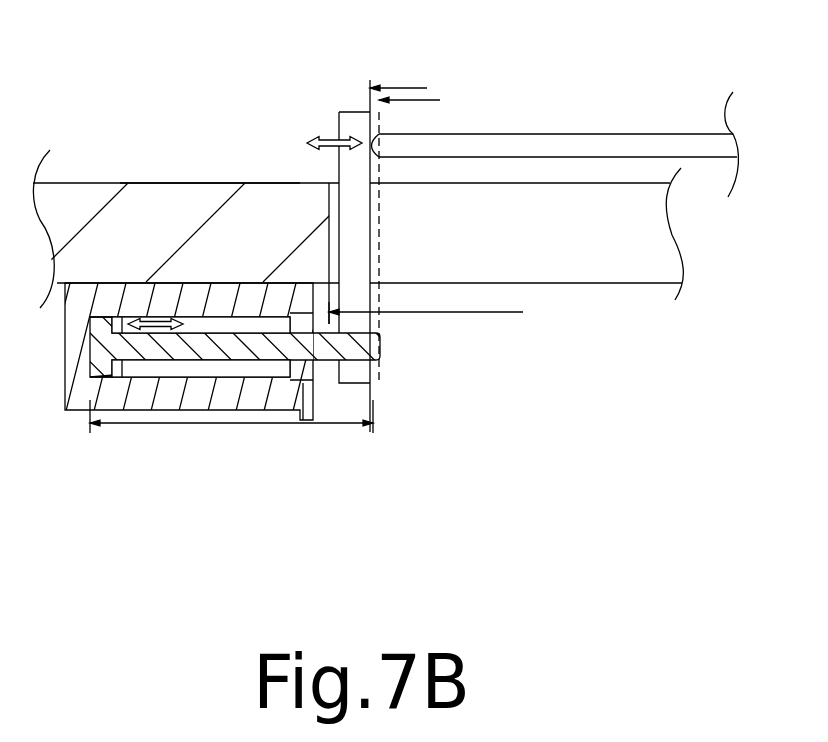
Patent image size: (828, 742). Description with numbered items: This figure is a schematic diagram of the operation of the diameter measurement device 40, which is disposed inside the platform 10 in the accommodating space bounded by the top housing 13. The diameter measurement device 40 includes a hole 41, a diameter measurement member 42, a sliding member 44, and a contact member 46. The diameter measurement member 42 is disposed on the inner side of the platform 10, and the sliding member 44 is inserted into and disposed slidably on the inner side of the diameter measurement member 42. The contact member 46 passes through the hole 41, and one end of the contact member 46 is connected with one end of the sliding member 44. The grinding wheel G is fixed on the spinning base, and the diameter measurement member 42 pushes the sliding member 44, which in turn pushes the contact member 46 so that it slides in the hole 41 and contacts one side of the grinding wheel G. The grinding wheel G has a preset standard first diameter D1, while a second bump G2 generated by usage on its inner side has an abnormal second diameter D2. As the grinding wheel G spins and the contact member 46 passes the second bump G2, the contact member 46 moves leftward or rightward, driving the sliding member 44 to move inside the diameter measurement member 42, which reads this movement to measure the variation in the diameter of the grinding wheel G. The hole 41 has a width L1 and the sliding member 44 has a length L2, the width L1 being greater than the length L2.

The platform 10 is at (146, 151).
The top housing 13 is at (185, 183).
The hole 41 is at (591, 288).
The diameter measurement device 40 is at (245, 327).
The diameter measurement member 42 is at (65, 382).
The sliding member 44 is at (380, 357).
The contact member 46 is at (370, 324).
The grinding wheel G is at (564, 133).
The second bump G2 is at (377, 160).
The first diameter D1 is at (435, 100).
The second diameter D2 is at (407, 88).
The width L1 is at (503, 313).
The length L2 is at (277, 424).